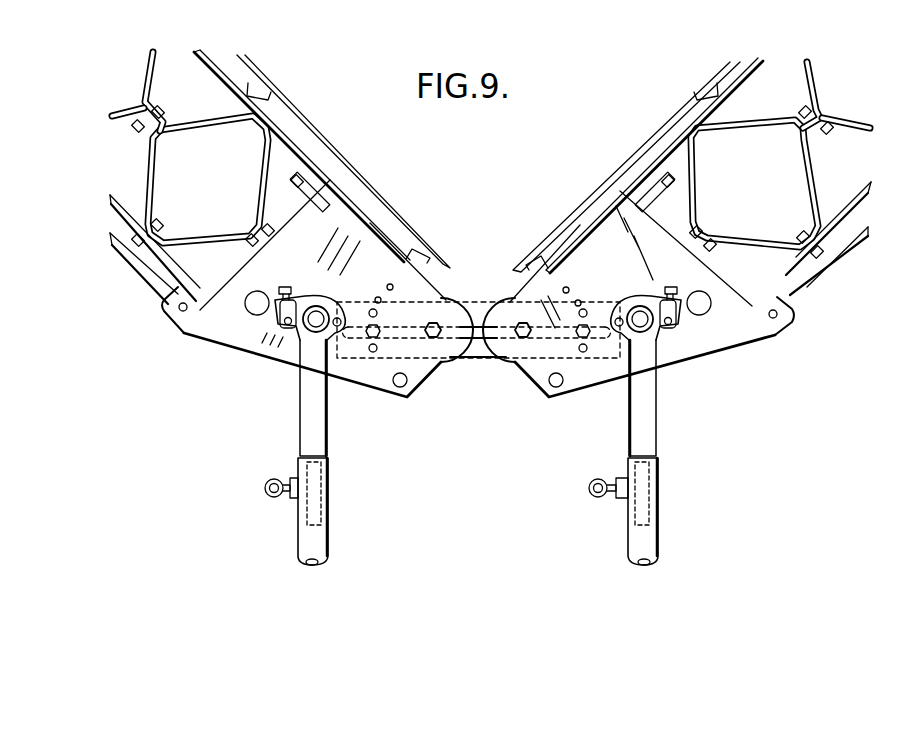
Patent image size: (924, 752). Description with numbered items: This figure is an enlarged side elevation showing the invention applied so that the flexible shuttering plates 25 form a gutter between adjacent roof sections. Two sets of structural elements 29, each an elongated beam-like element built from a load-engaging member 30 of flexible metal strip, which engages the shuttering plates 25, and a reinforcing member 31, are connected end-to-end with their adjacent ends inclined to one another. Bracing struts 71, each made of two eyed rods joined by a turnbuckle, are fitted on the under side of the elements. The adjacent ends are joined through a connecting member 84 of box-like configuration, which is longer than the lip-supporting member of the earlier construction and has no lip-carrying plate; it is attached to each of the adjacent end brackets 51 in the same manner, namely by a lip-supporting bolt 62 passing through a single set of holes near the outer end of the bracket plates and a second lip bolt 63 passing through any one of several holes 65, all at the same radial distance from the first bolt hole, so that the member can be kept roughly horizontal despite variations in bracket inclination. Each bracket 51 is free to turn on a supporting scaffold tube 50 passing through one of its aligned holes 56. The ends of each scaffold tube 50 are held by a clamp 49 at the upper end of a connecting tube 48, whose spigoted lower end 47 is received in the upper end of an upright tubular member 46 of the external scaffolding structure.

The shuttering plates 25 is at (357, 171).
The structural element 29 is at (273, 126).
The load-engaging member 30 is at (248, 82).
The reinforcing member 31 is at (107, 200).
The upright tubular members 46 is at (313, 541).
The spigoted lower end 47 is at (322, 474).
The connecting tube 48 is at (306, 436).
The clamp 49 is at (318, 338).
The supporting scaffold tube 50 is at (305, 328).
The bracket 51 is at (348, 368).
The aligned holes 56 is at (246, 302).
The lip-supporting bolt 62 is at (520, 318).
The second lip bolt 63 is at (382, 332).
The holes 65 is at (578, 302).
The struts 71 is at (150, 273).
The connecting member 84 is at (473, 350).